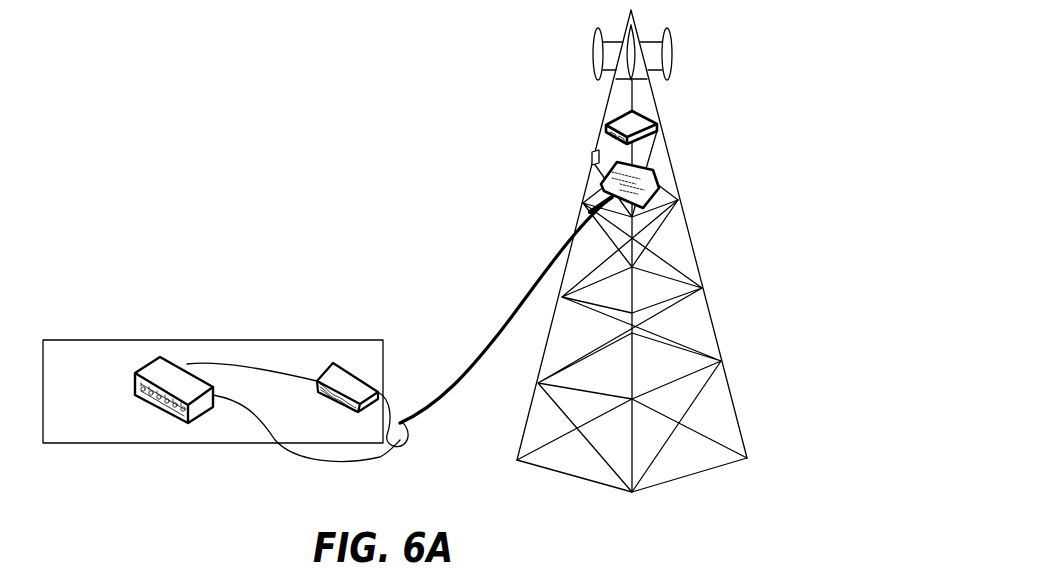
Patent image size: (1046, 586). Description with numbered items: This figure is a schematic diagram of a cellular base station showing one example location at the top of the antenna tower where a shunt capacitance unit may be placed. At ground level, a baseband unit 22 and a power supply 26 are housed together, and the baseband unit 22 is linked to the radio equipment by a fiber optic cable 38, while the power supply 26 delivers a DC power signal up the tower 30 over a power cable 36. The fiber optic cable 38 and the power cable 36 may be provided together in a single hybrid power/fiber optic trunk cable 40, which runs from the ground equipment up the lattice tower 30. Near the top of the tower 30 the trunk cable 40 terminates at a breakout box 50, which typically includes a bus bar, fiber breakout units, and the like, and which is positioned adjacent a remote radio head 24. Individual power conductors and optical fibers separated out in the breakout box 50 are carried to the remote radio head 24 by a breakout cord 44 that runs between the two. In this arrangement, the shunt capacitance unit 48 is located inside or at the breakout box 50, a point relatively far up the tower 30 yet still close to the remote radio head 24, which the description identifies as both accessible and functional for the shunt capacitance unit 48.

The baseband unit 22 is at (163, 370).
The remote radio head 24 is at (657, 127).
The power supply 26 is at (342, 368).
The tower 30 is at (692, 248).
The power cable 36 is at (388, 395).
The fiber optic cable 38 is at (288, 460).
The hybrid power/fiber optic trunk cable 40 is at (509, 313).
The breakout cord 44 is at (590, 147).
The shunt capacitance unit 48 is at (588, 203).
The breakout box 50 is at (600, 188).